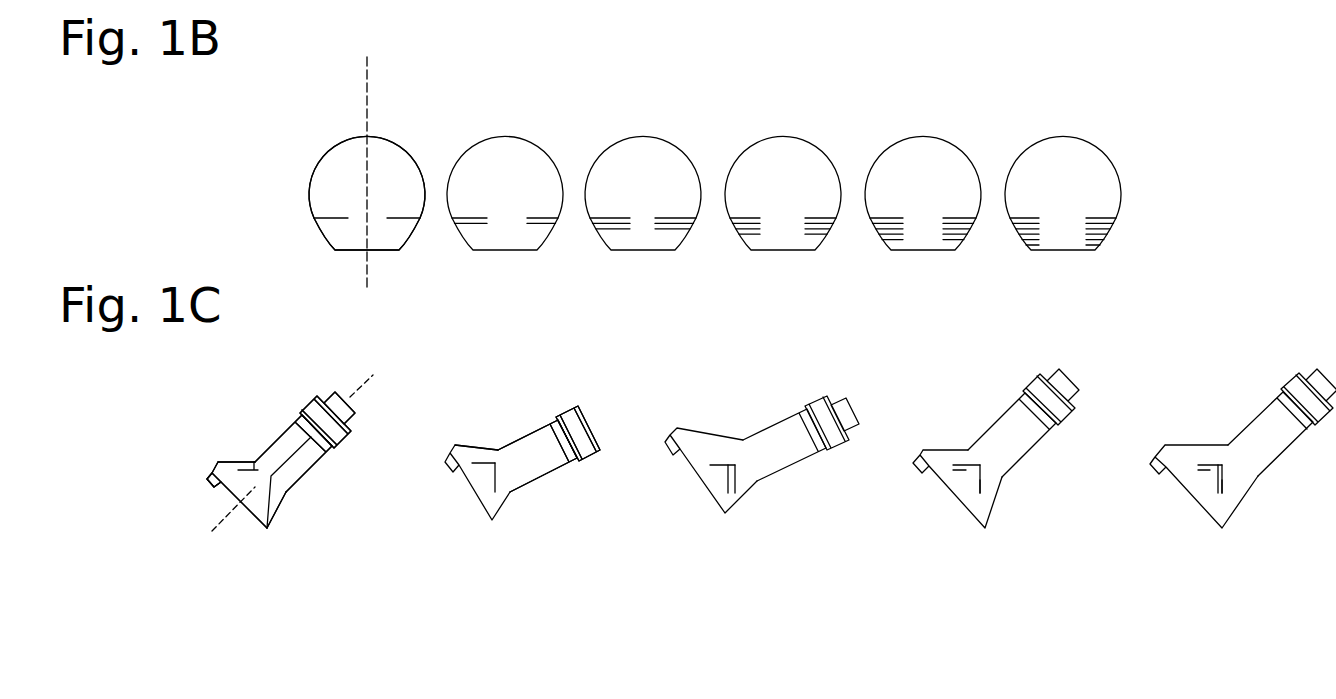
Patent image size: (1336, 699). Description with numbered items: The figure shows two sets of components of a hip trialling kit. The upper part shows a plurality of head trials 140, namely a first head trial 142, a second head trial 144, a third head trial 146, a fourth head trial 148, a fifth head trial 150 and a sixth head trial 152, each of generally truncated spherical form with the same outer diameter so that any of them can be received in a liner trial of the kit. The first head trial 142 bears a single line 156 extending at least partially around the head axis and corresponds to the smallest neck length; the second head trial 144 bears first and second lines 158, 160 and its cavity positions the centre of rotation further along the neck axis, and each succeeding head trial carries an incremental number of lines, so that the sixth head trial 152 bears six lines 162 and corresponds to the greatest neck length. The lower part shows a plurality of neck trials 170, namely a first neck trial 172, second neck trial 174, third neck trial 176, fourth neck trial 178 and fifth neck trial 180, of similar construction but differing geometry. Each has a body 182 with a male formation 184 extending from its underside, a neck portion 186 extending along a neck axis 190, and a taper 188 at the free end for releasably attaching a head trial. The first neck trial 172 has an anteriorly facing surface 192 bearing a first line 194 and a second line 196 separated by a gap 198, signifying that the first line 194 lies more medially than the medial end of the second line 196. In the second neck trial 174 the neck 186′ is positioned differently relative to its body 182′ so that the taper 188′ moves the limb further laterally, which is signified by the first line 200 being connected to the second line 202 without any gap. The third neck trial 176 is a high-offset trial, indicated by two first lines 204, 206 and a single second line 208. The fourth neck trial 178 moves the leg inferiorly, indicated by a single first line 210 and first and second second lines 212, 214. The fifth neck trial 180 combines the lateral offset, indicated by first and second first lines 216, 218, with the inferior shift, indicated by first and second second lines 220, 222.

In FIG. 1B, the head trials 140 is at (285, 187).
In FIG. 1B, the first head trial 142 is at (424, 130).
In FIG. 1B, the second head trial 144 is at (562, 130).
In FIG. 1B, the third head trial 146 is at (691, 130).
In FIG. 1B, the fourth head trial 148 is at (828, 130).
In FIG. 1B, the fifth head trial 150 is at (971, 130).
In FIG. 1B, the sixth head trial 152 is at (1111, 130).
In FIG. 1B, the single line 156 is at (348, 100).
In FIG. 1B, the first line 158 is at (470, 227).
In FIG. 1B, the second line 160 is at (542, 217).
In FIG. 1B, the six lines 162 is at (1130, 220).
In FIG. 1C, the neck trials 170 is at (208, 420).
In FIG. 1C, the first neck trial 172 is at (266, 553).
In FIG. 1C, the second neck trial 174 is at (573, 535).
In FIG. 1C, the third neck trial 176 is at (750, 542).
In FIG. 1C, the fourth neck trial 178 is at (1010, 547).
In FIG. 1C, the fifth neck trial 180 is at (1245, 547).
In FIG. 1C, the body 182 is at (236, 451).
In FIG. 1C, the body 182′ is at (485, 436).
In FIG. 1C, the male formation 184 is at (205, 492).
In FIG. 1C, the neck portion 186 is at (317, 480).
In FIG. 1C, the neck 186′ is at (553, 487).
In FIG. 1C, the taper 188 is at (294, 392).
In FIG. 1C, the taper 188′ is at (565, 400).
In FIG. 1C, the neck axis 190 is at (373, 397).
In FIG. 1C, the anteriorly facing surface 192 is at (245, 519).
In FIG. 1C, the first line 194 is at (292, 498).
In FIG. 1C, the second line 196 is at (253, 460).
In FIG. 1C, the gap 198 is at (267, 488).
In FIG. 1C, the first line 200 is at (502, 480).
In FIG. 1C, the second line 202 is at (485, 470).
In FIG. 1C, the first first line 204 is at (737, 485).
In FIG. 1C, the second first line 206 is at (726, 486).
In FIG. 1C, the second line 208 is at (720, 465).
In FIG. 1C, the first line 210 is at (1000, 483).
In FIG. 1C, the first second line 212 is at (968, 450).
In FIG. 1C, the second second line 214 is at (965, 475).
In FIG. 1C, the first first line 216 is at (1225, 483).
In FIG. 1C, the second first line 218 is at (1213, 493).
In FIG. 1C, the first second line 220 is at (1207, 458).
In FIG. 1C, the second second line 222 is at (1205, 476).